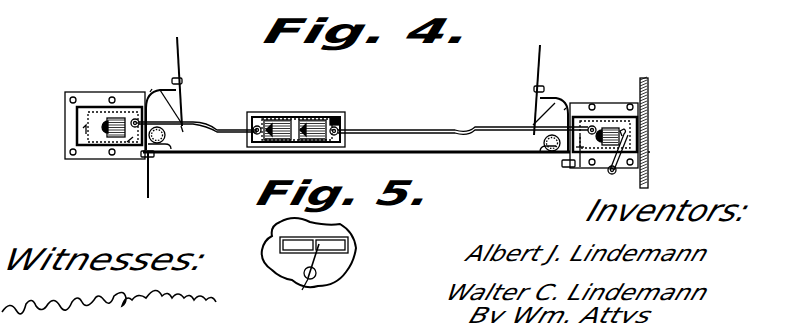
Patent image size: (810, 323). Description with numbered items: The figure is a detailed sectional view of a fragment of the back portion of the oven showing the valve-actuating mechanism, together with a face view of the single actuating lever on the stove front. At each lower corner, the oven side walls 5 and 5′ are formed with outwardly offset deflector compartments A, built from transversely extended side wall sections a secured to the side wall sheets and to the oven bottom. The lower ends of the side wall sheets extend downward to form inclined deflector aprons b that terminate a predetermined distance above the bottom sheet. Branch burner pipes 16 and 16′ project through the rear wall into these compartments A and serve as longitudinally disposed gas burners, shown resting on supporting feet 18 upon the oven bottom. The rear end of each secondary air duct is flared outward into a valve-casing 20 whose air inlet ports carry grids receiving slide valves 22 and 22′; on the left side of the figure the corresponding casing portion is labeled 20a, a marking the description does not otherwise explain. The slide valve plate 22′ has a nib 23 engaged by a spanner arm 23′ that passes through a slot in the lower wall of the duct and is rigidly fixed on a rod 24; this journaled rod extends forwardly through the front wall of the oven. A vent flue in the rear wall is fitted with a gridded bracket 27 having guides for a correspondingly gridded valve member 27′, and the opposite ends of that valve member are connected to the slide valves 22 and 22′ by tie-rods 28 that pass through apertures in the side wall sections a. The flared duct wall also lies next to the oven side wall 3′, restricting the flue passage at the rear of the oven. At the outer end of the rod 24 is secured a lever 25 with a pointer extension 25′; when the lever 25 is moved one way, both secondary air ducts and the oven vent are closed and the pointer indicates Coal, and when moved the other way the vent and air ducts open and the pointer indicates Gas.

In FIG. 4, the oven side wall 5 is at (180, 44).
In FIG. 4, the oven side wall 5′ is at (543, 56).
In FIG. 4, the bracket arm 20a is at (148, 93).
In FIG. 4, the deflector compartment A is at (163, 95).
In FIG. 4, the slide valve 22 is at (132, 137).
In FIG. 4, the branch burner pipe 16′ is at (167, 138).
In FIG. 4, the branch burner pipe 16 is at (544, 143).
In FIG. 4, the supporting feet 18 is at (535, 155).
In FIG. 4, the tie-rod 28 is at (228, 118).
In FIG. 4, the gridded bracket 27 is at (310, 112).
In FIG. 4, the gridded valve member 27′ is at (342, 112).
In FIG. 4, the deflector apron b is at (182, 114).
In FIG. 4, the side wall section a is at (567, 100).
In FIG. 4, the valve-casing 20 is at (605, 111).
In FIG. 4, the slide valve 22′ is at (647, 115).
In FIG. 4, the nib 23 is at (643, 126).
In FIG. 4, the spanner arm 23′ is at (606, 160).
In FIG. 4, the rod 24 is at (612, 170).
In FIG. 5, the rod 24 is at (272, 252).
In FIG. 4, the side wall of the oven 3′ is at (648, 152).
In FIG. 5, the lever 25 is at (308, 295).
In FIG. 5, the pointer extension 25′ is at (340, 260).